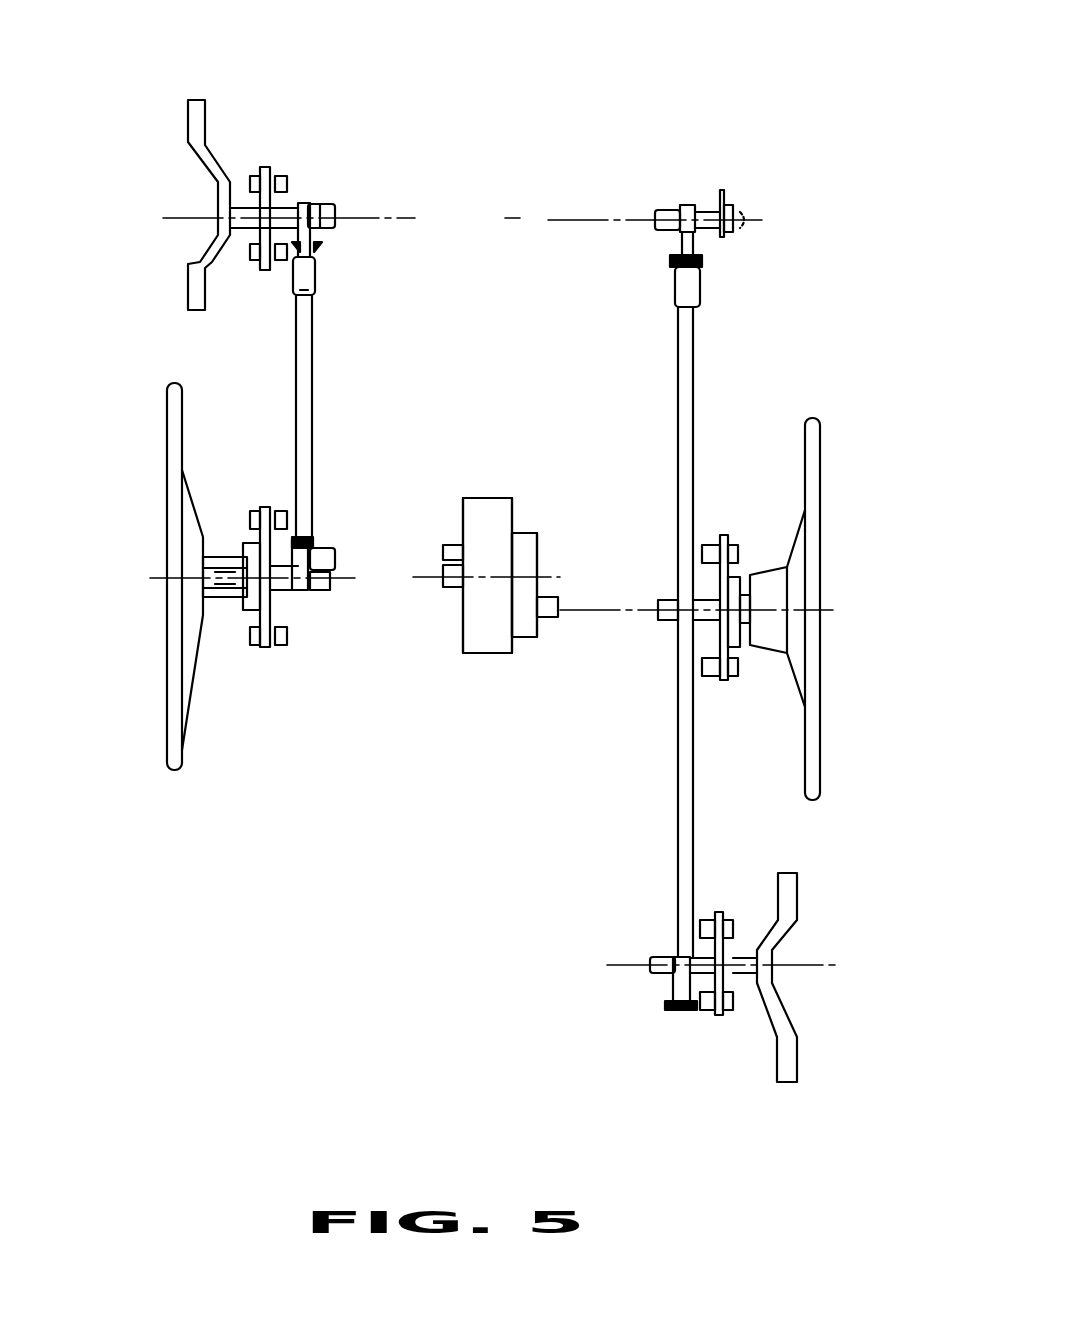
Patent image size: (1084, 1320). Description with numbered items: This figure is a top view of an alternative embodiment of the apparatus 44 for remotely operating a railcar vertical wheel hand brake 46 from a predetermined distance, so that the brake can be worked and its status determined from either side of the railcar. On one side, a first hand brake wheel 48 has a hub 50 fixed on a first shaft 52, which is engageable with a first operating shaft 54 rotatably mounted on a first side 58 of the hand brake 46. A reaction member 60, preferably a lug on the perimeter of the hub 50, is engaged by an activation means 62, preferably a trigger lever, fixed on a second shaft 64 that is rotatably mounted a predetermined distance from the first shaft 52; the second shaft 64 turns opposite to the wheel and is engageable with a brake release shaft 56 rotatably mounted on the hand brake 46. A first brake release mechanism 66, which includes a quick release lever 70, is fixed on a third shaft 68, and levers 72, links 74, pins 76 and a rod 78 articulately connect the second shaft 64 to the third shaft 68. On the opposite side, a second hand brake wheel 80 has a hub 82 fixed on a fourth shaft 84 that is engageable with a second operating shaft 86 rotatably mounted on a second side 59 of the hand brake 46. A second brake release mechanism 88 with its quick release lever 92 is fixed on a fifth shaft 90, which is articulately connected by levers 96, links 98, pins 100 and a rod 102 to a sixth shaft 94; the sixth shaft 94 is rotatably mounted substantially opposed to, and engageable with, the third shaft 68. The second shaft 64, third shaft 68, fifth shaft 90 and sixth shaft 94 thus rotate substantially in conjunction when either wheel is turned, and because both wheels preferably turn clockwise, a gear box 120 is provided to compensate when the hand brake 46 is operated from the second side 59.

The apparatus 44 is at (482, 72).
The hand brake 46 is at (485, 487).
The first hand brake wheel 48 is at (180, 750).
The hub 50 is at (212, 592).
The first shaft 52 is at (282, 592).
The first operating shaft 54 is at (455, 560).
The brake release shaft 56 is at (440, 550).
The first side 58 is at (463, 628).
The second side 59 is at (537, 553).
The reaction member 60 is at (220, 553).
The activation means 62 is at (262, 507).
The second shaft 64 is at (322, 562).
The first brake release mechanism 66 is at (158, 290).
The third shaft 68 is at (322, 207).
The quick release lever 70 is at (198, 302).
The levers 72 is at (303, 203).
The links 74 is at (318, 278).
The pins 76 is at (316, 250).
The rod 78 is at (307, 412).
The second hand brake wheel 80 is at (820, 453).
The hub 82 is at (765, 597).
The fourth shaft 84 is at (663, 622).
The second operating shaft 86 is at (550, 617).
The second brake release mechanism 88 is at (833, 913).
The fifth shaft 90 is at (662, 975).
The quick release lever 92 is at (797, 887).
The sixth shaft 94 is at (668, 212).
The levers 96 is at (694, 240).
The links 98 is at (701, 293).
The pins 100 is at (673, 260).
The rod 102 is at (690, 453).
The gear box 120 is at (528, 543).